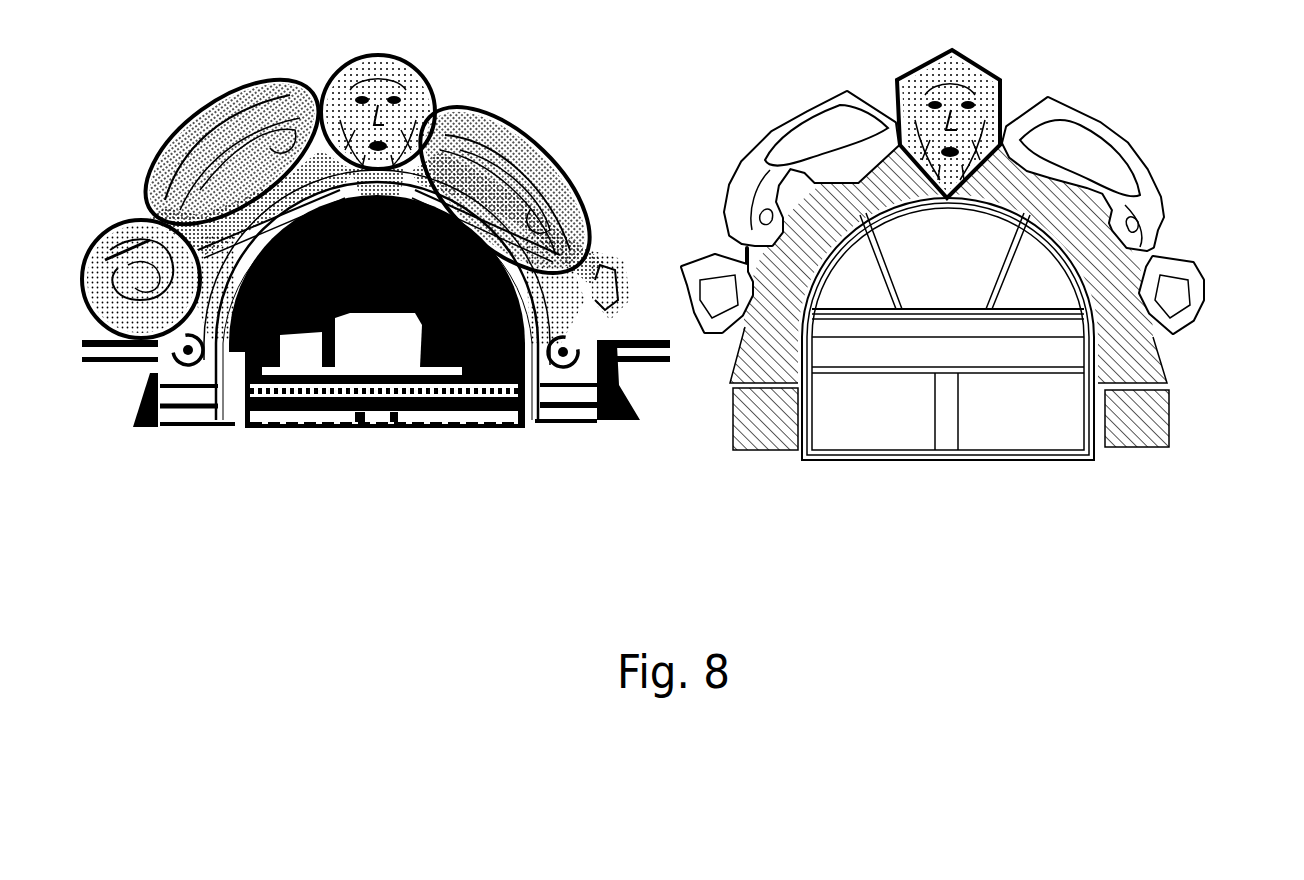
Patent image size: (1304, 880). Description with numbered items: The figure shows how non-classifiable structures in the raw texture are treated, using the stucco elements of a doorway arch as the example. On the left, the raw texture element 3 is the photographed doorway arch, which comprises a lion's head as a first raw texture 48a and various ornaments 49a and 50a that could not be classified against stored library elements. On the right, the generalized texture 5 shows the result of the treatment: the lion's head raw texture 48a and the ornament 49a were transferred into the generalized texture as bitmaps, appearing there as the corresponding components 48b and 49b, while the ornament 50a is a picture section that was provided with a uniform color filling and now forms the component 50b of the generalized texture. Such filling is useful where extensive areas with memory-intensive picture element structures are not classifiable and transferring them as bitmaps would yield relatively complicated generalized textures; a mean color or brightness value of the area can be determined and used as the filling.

The raw texture element 3 is at (387, 455).
The generalized texture 5 is at (956, 492).
The first raw texture 48a is at (338, 77).
The lion's head component of generalized texture 48b is at (903, 77).
The ornament 49a is at (118, 217).
The ornament component of generalized texture 49b is at (707, 260).
The ornament 50a is at (533, 153).
The component of generalized texture 50b is at (1137, 355).